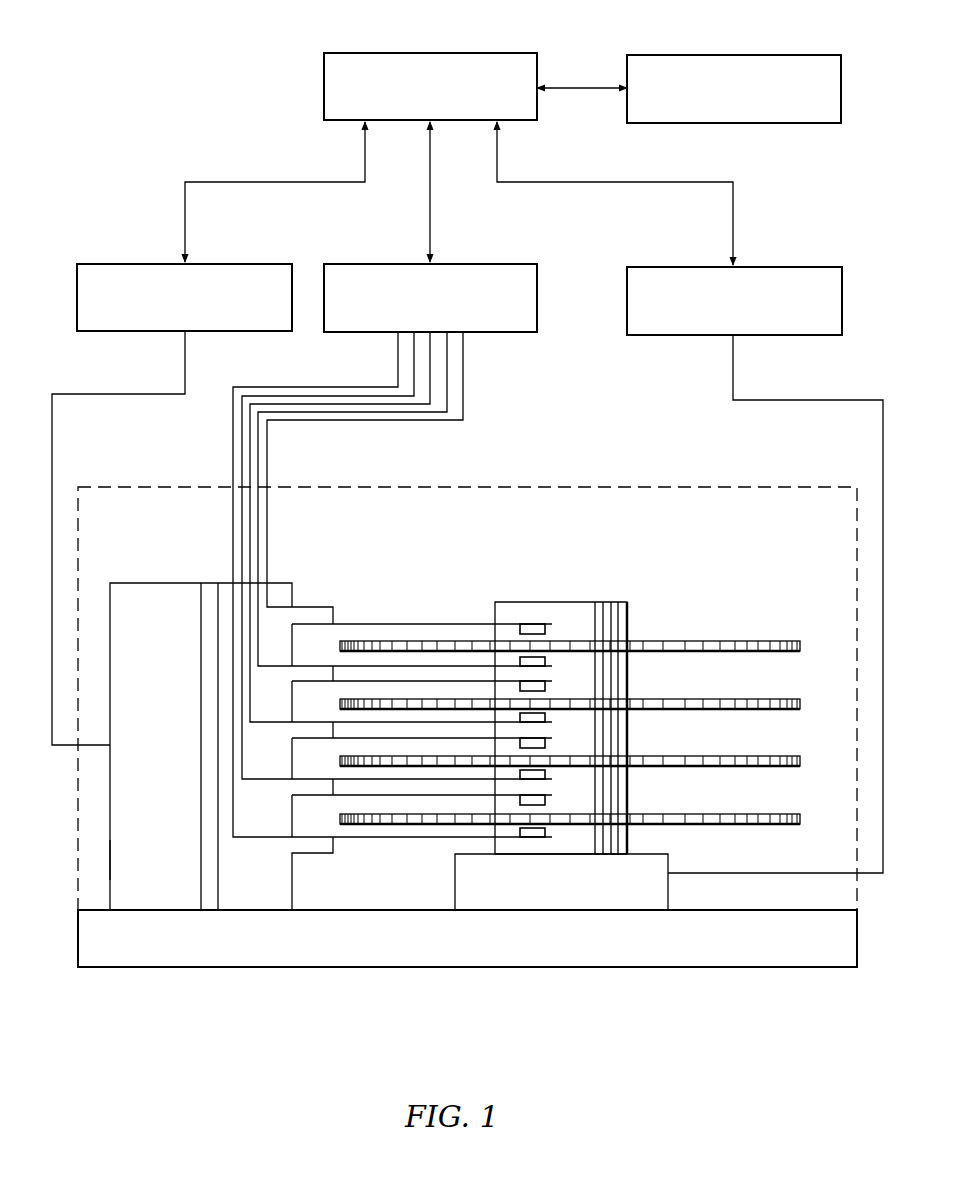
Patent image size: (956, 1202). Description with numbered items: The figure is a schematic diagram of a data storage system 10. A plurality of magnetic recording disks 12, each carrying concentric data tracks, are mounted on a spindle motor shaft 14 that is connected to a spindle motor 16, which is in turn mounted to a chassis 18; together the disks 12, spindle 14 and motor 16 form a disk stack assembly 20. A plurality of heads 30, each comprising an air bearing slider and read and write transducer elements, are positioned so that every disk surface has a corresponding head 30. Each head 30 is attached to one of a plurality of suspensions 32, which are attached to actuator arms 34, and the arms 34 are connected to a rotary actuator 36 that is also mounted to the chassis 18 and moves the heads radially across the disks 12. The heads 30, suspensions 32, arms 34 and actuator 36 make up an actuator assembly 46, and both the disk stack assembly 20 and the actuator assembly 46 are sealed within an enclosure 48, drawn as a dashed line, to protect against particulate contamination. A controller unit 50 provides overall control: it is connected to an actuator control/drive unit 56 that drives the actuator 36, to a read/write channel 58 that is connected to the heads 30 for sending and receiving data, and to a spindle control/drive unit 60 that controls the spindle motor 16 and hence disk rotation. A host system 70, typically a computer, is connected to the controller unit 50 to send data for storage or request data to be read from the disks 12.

The data storage system 10 is at (152, 1038).
The magnetic recording disks 12 is at (788, 653).
The spindle motor shaft 14 is at (535, 602).
The spindle motor 16 is at (573, 900).
The chassis 18 is at (758, 962).
The disk stack assembly 20 is at (455, 878).
The heads 30 is at (552, 664).
The suspensions 32 is at (363, 722).
The actuator arms 34 is at (305, 845).
The rotary actuator 36 is at (144, 724).
The actuator assembly 46 is at (118, 858).
The enclosure 48 is at (571, 487).
The controller unit 50 is at (338, 52).
The actuator control/drive unit 56 is at (91, 263).
The read/write channel 58 is at (516, 264).
The spindle control/drive unit 60 is at (821, 267).
The host system 70 is at (822, 55).